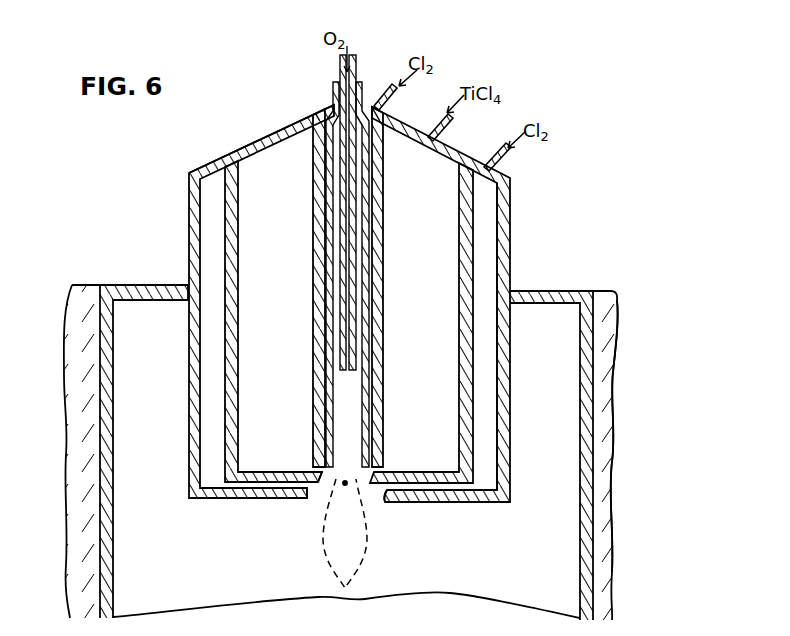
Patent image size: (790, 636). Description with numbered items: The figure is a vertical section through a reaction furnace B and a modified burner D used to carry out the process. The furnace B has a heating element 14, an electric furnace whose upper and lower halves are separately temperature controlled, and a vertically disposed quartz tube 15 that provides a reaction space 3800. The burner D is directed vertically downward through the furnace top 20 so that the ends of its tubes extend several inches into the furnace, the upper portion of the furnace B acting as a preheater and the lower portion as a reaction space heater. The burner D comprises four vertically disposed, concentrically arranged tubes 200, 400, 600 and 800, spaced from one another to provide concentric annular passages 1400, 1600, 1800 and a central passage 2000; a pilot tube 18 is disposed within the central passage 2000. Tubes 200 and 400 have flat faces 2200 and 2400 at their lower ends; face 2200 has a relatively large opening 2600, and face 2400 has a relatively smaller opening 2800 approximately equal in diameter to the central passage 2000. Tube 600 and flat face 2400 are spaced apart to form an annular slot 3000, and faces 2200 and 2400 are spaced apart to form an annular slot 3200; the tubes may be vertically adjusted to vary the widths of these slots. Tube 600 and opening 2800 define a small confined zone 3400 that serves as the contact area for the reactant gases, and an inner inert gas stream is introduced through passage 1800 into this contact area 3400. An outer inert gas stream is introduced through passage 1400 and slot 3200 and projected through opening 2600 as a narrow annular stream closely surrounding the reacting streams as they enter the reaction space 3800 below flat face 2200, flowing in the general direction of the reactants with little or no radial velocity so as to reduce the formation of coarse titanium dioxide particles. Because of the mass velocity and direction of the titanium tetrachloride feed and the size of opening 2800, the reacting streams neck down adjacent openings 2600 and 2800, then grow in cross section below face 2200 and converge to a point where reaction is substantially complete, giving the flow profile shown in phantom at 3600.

The heating element 14 is at (622, 423).
The tube 15 is at (590, 353).
The pilot tube 18 is at (359, 78).
The furnace top 20 is at (577, 291).
The reaction furnace B is at (611, 455).
The burner D is at (211, 154).
The tube 200 is at (510, 270).
The tube 400 is at (460, 321).
The tube 600 is at (382, 284).
The tube 800 is at (332, 230).
The annular passage 1400 is at (487, 247).
The annular passage 1600 is at (447, 213).
The annular passage 1800 is at (370, 159).
The central passage 2000 is at (358, 244).
The flat face 2200 is at (463, 500).
The flat face 2400 is at (419, 472).
The opening 2600 is at (388, 491).
The opening 2800 is at (323, 484).
The annular slot 3000 is at (384, 468).
The annular slot 3200 is at (311, 478).
The confined zone 3400 is at (345, 482).
The reacting stream flow profile 3600 is at (359, 569).
The reaction space 3800 is at (314, 558).